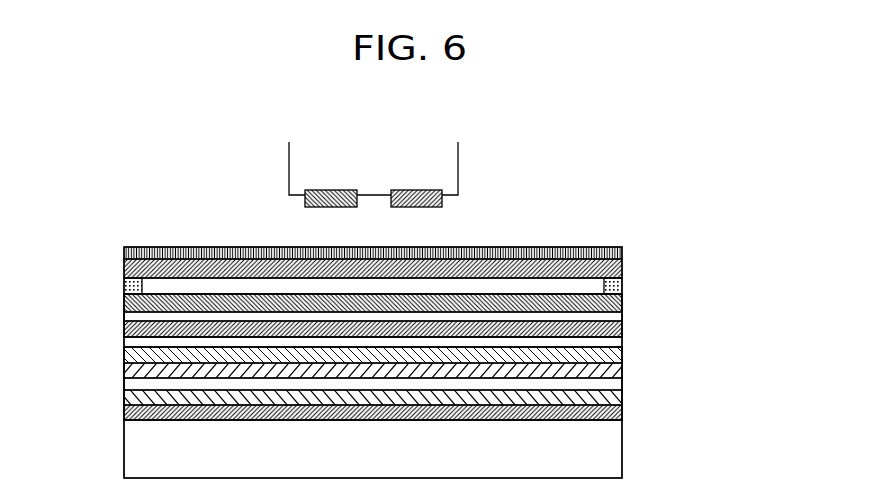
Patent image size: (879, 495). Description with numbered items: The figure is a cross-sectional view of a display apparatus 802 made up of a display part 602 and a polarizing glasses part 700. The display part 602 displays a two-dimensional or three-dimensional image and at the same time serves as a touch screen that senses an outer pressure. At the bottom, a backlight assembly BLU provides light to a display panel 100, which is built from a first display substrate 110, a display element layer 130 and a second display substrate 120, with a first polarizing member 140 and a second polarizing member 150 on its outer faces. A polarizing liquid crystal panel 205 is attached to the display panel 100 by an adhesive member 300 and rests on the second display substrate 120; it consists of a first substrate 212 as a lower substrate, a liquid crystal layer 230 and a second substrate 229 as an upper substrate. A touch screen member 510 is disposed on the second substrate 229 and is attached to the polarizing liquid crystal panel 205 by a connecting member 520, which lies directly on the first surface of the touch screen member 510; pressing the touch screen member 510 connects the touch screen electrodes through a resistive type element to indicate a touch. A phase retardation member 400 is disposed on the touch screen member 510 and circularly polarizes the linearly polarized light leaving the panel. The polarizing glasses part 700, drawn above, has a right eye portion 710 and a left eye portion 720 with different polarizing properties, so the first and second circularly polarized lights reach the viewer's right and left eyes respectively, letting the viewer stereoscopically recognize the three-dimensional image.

The display part 602 is at (565, 247).
The phase retardation member 400 is at (624, 252).
The touch screen member 510 is at (124, 268).
The connecting member 520 is at (124, 287).
The polarizing liquid crystal panel 205 is at (432, 305).
The second substrate 229 is at (622, 300).
The liquid crystal layer 230 is at (622, 317).
The first substrate 212 is at (622, 330).
The adhesive member 300 is at (124, 341).
The display panel 100 is at (431, 391).
The second polarizing member 150 is at (622, 357).
The second display substrate 120 is at (622, 371).
The display element layer 130 is at (622, 385).
The first display substrate 110 is at (622, 399).
The first polarizing member 140 is at (408, 422).
The backlight assembly BLU is at (622, 458).
The display apparatus 802 is at (439, 166).
The polarizing glasses part 700 is at (417, 171).
The right eye portion 710 is at (332, 190).
The left eye portion 720 is at (414, 190).